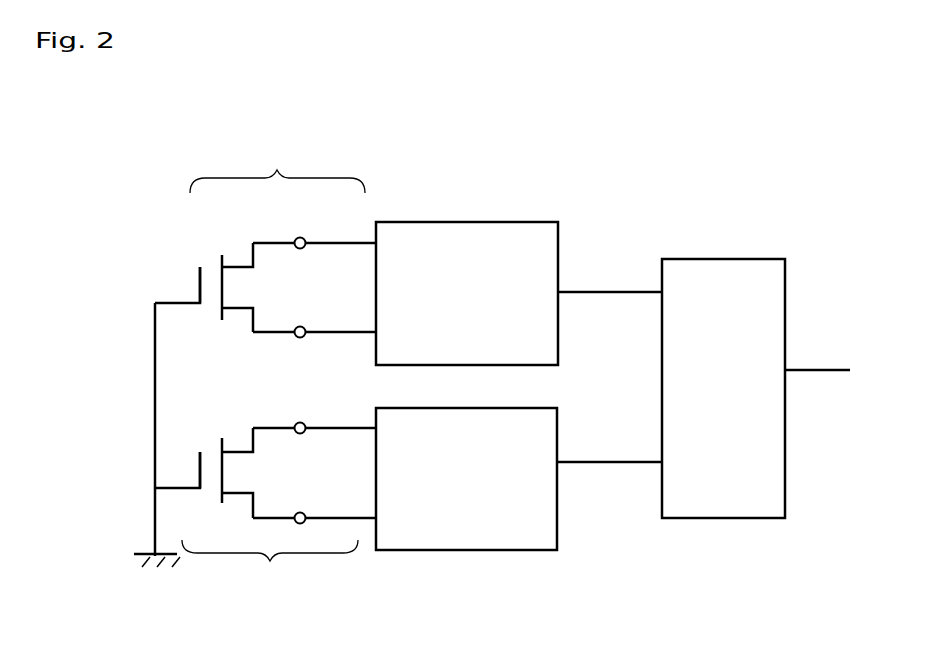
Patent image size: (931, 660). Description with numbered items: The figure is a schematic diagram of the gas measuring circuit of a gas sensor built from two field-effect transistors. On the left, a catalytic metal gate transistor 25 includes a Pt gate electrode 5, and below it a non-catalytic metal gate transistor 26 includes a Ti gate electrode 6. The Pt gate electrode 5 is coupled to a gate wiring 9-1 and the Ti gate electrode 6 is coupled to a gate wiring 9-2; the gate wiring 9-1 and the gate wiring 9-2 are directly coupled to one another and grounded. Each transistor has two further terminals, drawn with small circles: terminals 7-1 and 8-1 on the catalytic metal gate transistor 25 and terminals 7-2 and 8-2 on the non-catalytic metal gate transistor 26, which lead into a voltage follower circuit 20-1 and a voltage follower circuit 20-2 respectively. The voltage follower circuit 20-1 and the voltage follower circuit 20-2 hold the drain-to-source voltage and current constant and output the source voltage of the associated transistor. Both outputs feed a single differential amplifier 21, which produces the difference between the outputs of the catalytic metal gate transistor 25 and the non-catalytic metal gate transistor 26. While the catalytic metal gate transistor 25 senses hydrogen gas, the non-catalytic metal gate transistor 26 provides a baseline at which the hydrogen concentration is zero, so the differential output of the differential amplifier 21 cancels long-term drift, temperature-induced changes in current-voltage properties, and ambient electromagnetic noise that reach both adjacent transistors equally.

The Pt gate electrode 5 is at (200, 282).
The Ti gate electrode 6 is at (200, 465).
The first drain terminal 7-1 is at (263, 243).
The first source terminal 8-1 is at (277, 332).
The second drain terminal 7-2 is at (263, 428).
The second source terminal 8-2 is at (277, 518).
The gate wiring 9-1 is at (175, 302).
The gate wiring 9-2 is at (182, 489).
The voltage follower circuit 20-1 is at (475, 252).
The voltage follower circuit 20-2 is at (455, 517).
The differential amplifier 21 is at (703, 275).
The catalytic metal gate transistor 25 is at (277, 166).
The non-catalytic metal gate transistor 26 is at (270, 568).